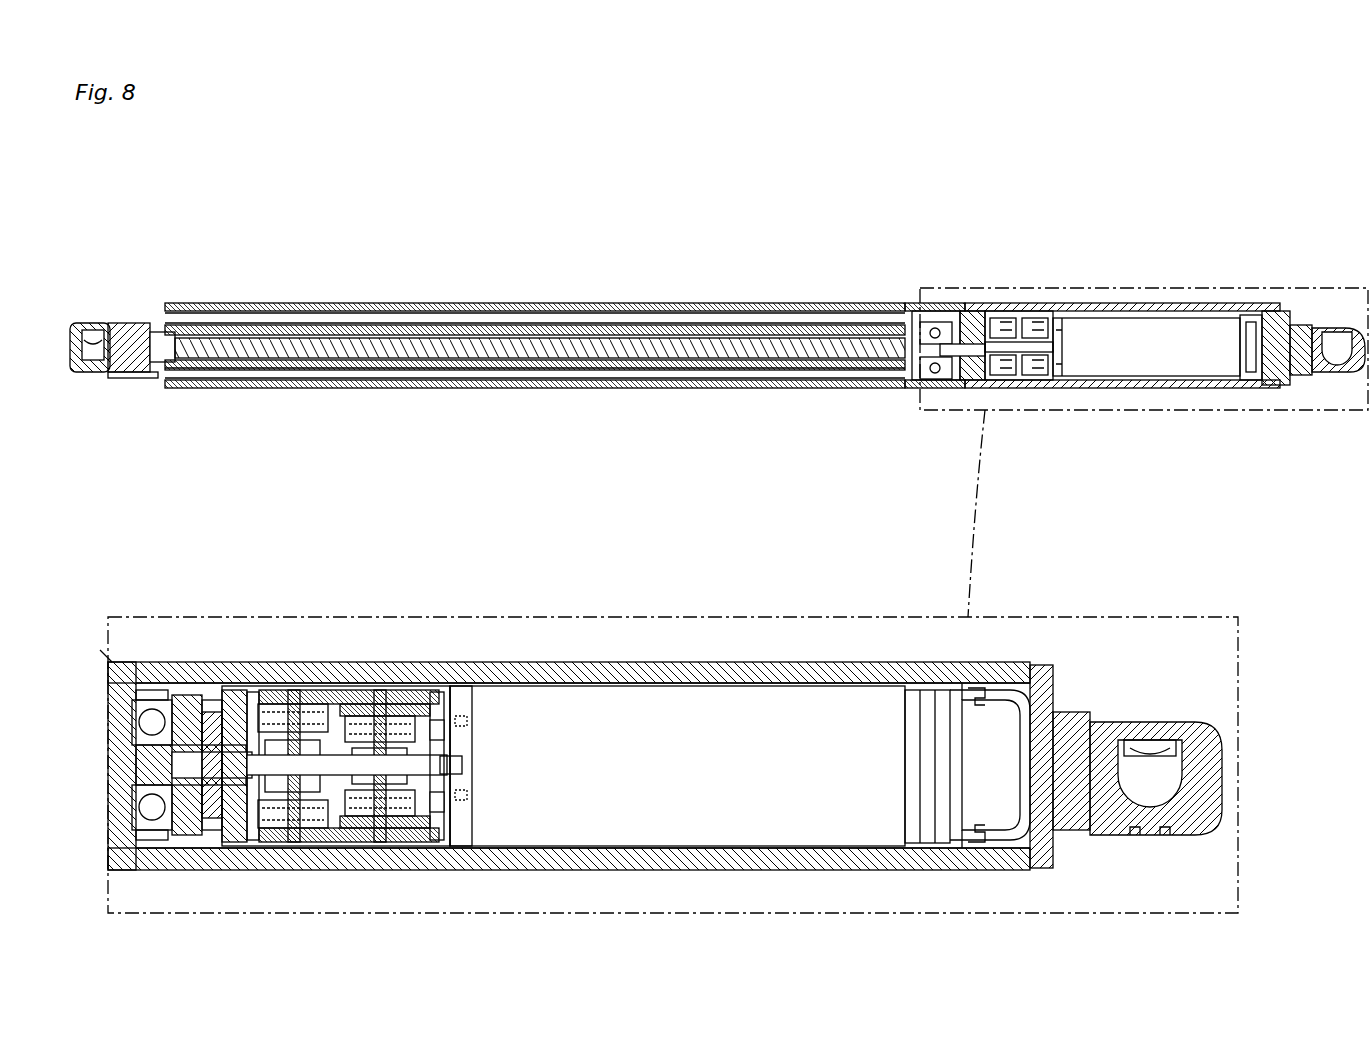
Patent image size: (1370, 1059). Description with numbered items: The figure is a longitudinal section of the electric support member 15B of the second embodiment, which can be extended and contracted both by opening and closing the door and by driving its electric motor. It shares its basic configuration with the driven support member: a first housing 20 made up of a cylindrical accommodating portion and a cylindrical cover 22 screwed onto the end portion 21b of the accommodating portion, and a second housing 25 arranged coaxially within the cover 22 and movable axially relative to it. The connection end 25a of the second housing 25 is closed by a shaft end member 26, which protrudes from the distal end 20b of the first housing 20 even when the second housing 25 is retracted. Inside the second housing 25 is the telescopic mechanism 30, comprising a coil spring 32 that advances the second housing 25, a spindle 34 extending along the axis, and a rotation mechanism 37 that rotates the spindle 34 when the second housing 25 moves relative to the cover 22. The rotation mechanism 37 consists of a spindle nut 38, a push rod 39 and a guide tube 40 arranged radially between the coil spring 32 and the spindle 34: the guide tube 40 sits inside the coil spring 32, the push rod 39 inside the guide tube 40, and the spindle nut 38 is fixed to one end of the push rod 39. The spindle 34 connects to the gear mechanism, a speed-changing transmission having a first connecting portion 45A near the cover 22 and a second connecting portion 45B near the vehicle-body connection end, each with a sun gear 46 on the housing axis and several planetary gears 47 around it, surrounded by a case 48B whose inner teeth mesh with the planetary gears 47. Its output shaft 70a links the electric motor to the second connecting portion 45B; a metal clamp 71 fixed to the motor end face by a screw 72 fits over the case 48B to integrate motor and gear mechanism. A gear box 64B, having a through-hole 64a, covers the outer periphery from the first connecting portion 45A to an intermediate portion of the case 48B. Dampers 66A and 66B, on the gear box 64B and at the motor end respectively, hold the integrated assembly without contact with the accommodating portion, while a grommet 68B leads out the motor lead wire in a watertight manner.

The support member 15B is at (188, 258).
The first housing 20 is at (1062, 284).
The distal end 20b is at (156, 380).
The end portion 21b is at (108, 662).
The cover 22 is at (845, 303).
The second housing 25 is at (690, 303).
The connection end 25a is at (140, 316).
The shaft end member 26 is at (106, 375).
The telescopic mechanism 30 is at (535, 425).
The coil spring 32 is at (722, 490).
The spindle 34 is at (618, 395).
The rotation mechanism 37 is at (505, 405).
The spindle nut 38 is at (845, 388).
The push rod 39 is at (710, 392).
The guide tube 40 is at (660, 392).
The first connecting portion 45A is at (195, 700).
The second connecting portion 45B is at (408, 830).
The sun gear 46 is at (400, 704).
The planetary gear 47 is at (360, 700).
The case 48B is at (382, 704).
The through-hole 64a is at (178, 830).
The gear box 64B is at (292, 690).
The damper 66A is at (228, 690).
The damper 66B is at (935, 690).
The grommet 68B is at (1020, 690).
The output shaft 70a is at (450, 700).
The clamp 71 is at (455, 862).
The screw 72 is at (468, 790).